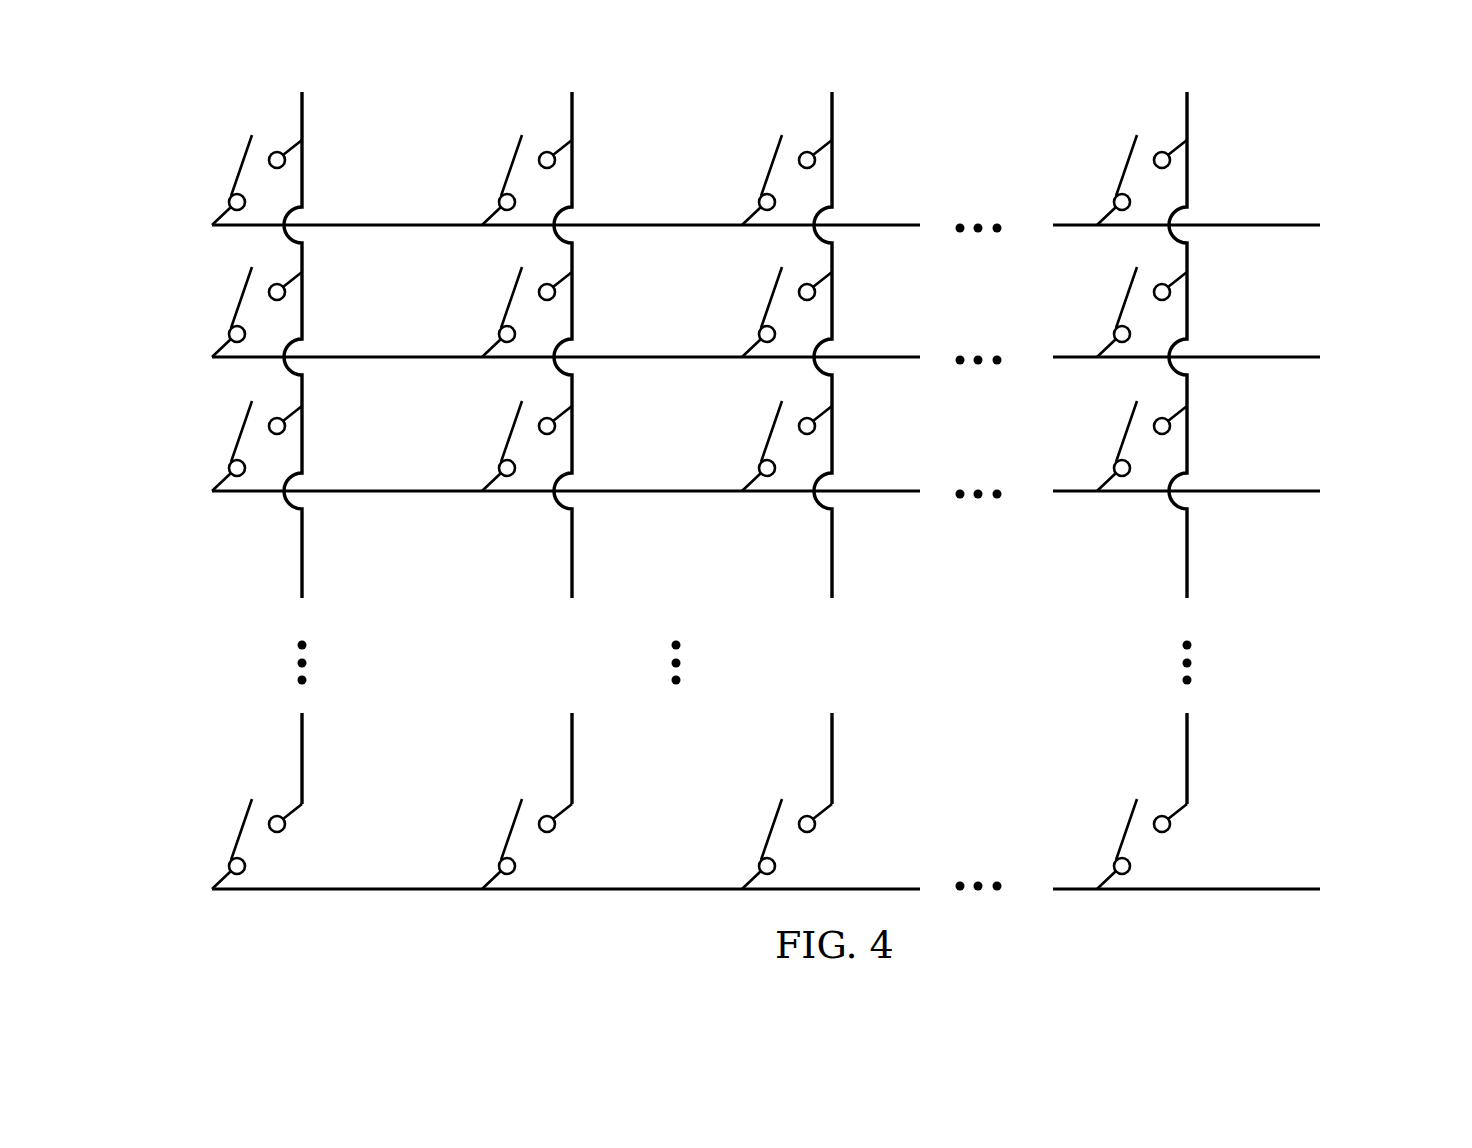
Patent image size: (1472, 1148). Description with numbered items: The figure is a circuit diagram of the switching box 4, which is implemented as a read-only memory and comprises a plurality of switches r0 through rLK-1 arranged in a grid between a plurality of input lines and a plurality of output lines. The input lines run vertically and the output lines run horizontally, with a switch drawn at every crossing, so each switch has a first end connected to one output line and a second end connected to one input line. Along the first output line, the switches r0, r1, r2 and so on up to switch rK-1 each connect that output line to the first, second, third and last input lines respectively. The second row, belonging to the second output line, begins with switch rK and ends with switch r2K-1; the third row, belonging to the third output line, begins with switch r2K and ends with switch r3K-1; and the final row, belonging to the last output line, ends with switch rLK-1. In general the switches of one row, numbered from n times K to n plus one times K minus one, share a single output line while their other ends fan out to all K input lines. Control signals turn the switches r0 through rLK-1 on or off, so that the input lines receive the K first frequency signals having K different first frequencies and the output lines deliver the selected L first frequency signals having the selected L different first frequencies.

The switching box 4 is at (121, 74).
The switch r0 is at (257, 180).
The switch r1 is at (527, 180).
The switch r2 is at (787, 180).
The switch rK-1 is at (1133, 180).
The switch rK is at (257, 312).
The switch r2K-1 is at (1126, 312).
The switch r2K is at (251, 446).
The switch r3K-1 is at (1126, 446).
The switch rLK-1 is at (1125, 844).